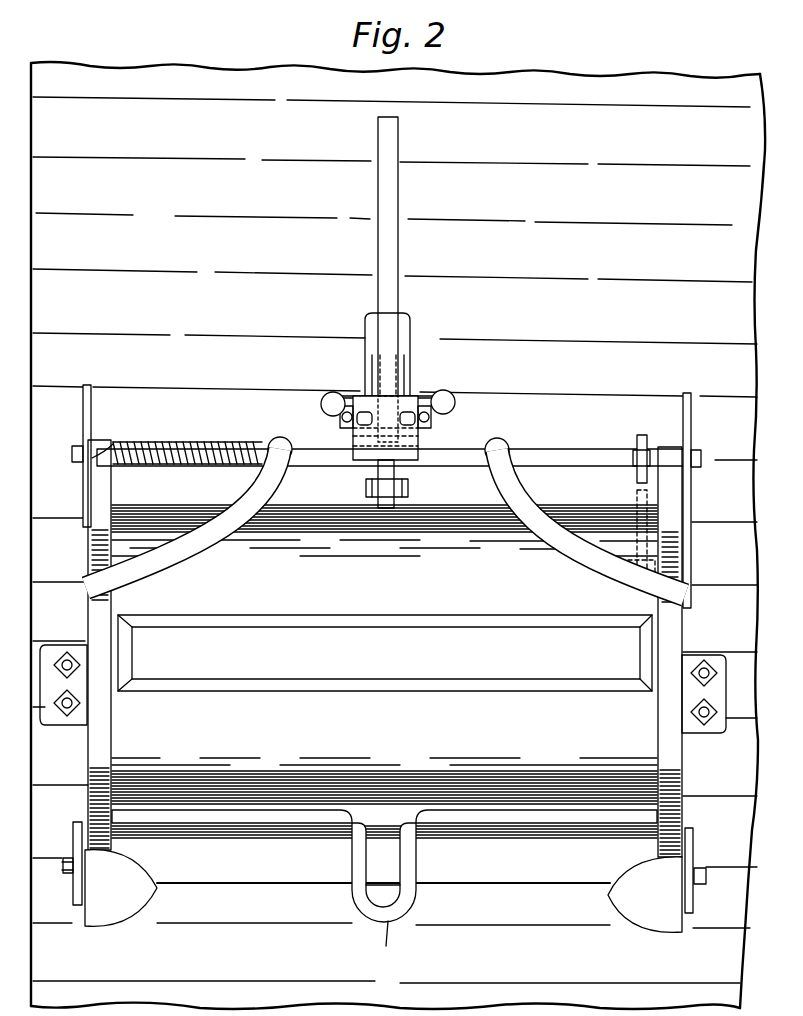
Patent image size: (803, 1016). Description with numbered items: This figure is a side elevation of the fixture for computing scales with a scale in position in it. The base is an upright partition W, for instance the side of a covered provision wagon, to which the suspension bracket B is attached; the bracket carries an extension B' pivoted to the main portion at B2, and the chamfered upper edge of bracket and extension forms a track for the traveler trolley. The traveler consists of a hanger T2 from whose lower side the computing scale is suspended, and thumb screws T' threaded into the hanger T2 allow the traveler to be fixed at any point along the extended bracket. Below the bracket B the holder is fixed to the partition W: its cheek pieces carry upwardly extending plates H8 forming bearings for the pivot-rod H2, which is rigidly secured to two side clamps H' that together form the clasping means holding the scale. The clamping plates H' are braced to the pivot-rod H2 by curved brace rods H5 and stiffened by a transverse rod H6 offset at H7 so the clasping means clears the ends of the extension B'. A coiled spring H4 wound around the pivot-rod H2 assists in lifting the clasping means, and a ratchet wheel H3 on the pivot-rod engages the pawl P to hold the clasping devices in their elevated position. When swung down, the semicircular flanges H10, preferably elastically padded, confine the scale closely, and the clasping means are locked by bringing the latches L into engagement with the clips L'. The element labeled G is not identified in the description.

The upright partition W is at (398, 535).
The extension B' is at (410, 279).
The pivot B2 is at (372, 405).
The hanger T2 is at (410, 322).
The thumb screws T' is at (403, 389).
The suspension bracket B is at (356, 452).
The pivot-rod H2 is at (562, 449).
The upwardly extending plate H8 is at (82, 496).
The coiled spring H4 is at (186, 428).
The ratchet wheel H3 is at (640, 433).
The pawl P is at (635, 493).
The side clamps H' is at (378, 648).
The semicircular flanges H10 is at (110, 730).
The curved brace rods H5 is at (226, 543).
The panel G is at (385, 678).
The transverse rod H6 is at (486, 822).
The offset H7 is at (370, 946).
The latches L is at (369, 865).
The clips L' is at (371, 869).